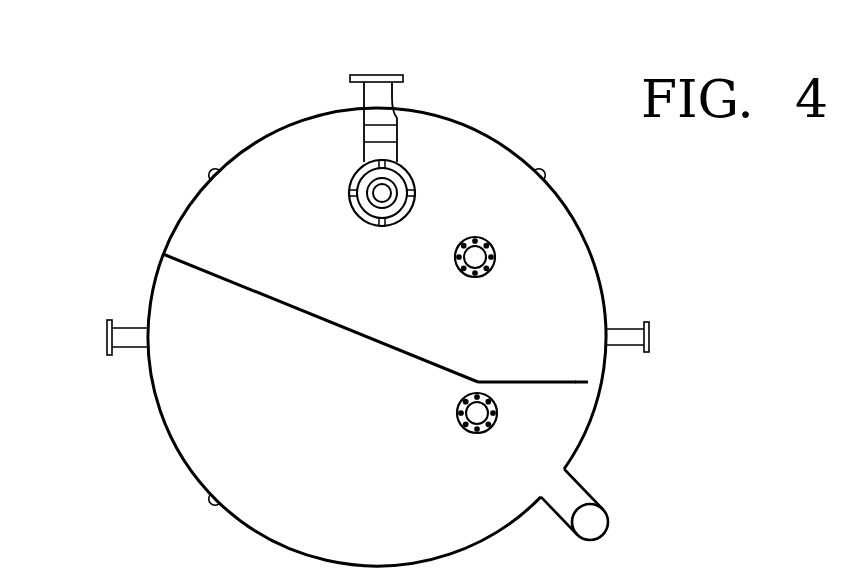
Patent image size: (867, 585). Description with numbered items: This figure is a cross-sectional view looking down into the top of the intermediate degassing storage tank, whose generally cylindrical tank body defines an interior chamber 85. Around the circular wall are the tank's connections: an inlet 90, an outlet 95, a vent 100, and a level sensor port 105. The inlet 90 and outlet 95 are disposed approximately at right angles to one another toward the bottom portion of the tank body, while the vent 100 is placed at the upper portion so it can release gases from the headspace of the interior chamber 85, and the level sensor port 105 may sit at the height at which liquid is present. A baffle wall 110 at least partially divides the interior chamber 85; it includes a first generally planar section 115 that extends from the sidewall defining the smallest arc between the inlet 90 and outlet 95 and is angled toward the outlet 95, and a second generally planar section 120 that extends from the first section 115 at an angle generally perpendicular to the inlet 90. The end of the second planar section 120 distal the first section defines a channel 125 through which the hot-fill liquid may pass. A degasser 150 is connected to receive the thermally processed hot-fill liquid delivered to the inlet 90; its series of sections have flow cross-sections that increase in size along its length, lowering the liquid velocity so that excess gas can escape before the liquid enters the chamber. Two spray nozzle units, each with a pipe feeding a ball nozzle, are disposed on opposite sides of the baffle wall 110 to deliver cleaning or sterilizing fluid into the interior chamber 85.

The interior chamber 85 is at (402, 298).
The inlet 90 is at (375, 74).
The outlet 95 is at (107, 333).
The vent 100 is at (588, 486).
The level sensor port 105 is at (650, 336).
The baffle wall 110 is at (424, 304).
The first generally planar section 115 is at (325, 325).
The second generally planar section 120 is at (581, 327).
The channel 125 is at (578, 376).
The degasser 150 is at (402, 152).